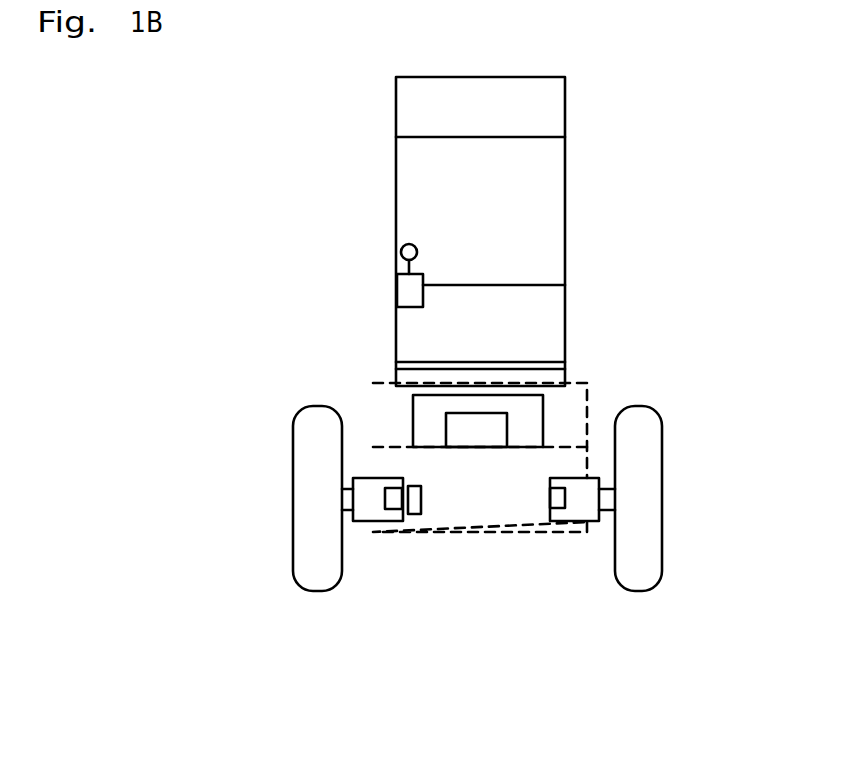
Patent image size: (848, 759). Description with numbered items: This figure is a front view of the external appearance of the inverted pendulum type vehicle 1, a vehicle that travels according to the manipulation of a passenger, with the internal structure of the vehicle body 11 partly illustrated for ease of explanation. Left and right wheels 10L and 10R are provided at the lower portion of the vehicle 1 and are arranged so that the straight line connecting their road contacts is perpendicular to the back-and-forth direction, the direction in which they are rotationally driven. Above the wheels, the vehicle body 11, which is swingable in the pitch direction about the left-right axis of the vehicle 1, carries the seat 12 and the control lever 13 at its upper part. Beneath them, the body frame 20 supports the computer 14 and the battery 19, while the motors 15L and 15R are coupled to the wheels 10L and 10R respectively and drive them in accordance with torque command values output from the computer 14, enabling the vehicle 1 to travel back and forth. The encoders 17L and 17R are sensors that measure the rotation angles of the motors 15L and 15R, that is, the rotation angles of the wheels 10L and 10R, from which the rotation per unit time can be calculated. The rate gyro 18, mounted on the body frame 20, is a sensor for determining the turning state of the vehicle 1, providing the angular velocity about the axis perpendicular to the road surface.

The inverted pendulum type vehicle 1 is at (670, 79).
The right wheel 10R is at (315, 410).
The left wheel 10L is at (657, 473).
The vehicle body 11 is at (620, 332).
The seat 12 is at (565, 208).
The control lever 13 is at (410, 243).
The computer 14 is at (473, 442).
The right motor 15R is at (373, 513).
The left motor 15L is at (575, 520).
The right encoder 17R is at (395, 503).
The left encoder 17L is at (550, 503).
The rate gyro 18 is at (413, 512).
The battery 19 is at (545, 412).
The body frame 20 is at (375, 377).